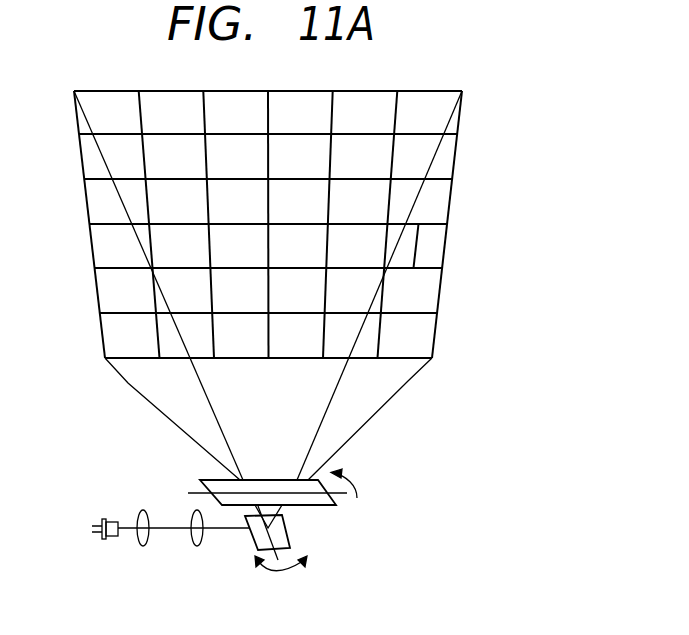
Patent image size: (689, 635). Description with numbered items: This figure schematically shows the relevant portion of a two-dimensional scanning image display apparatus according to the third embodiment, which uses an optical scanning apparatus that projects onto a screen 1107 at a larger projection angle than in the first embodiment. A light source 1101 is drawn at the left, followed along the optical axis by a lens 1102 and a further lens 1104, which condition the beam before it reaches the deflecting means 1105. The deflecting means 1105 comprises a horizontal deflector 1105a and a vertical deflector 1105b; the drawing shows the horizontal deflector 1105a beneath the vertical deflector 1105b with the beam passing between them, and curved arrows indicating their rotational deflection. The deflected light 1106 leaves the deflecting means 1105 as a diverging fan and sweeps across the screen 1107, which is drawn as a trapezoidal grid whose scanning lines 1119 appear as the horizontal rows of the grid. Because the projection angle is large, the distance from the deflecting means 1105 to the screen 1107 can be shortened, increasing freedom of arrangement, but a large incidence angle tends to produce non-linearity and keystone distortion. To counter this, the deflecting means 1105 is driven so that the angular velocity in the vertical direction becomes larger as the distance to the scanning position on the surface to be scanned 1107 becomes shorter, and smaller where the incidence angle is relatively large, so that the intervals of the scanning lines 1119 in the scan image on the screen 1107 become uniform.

The laser light source 1101 is at (110, 542).
The collimator lens 1102 is at (143, 548).
The lens 1104 is at (197, 548).
The deflecting means 1105 is at (329, 540).
The horizontal deflector 1105a is at (290, 533).
The vertical deflector 1105b is at (293, 505).
The scanned light beam 1106 is at (378, 412).
The screen 1107 is at (462, 120).
The pixel region on screen 1119 is at (423, 257).